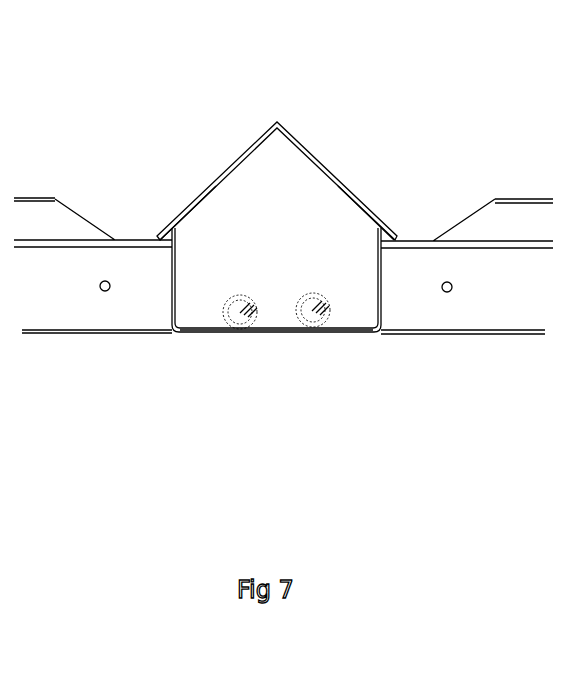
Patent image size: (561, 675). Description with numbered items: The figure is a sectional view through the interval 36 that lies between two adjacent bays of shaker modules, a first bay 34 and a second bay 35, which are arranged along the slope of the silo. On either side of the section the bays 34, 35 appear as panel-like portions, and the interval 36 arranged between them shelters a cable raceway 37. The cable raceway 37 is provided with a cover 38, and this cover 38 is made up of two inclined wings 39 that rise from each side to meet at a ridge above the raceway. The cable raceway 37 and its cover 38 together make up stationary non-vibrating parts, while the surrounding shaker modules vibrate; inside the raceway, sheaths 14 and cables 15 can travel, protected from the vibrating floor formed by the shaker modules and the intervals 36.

The sheath 14 is at (298, 333).
The cable 15 is at (300, 322).
The bay 34 is at (35, 178).
The bay 35 is at (527, 187).
The interval 36 is at (276, 277).
The cable raceway 37 is at (365, 335).
The cover 38 is at (282, 105).
The inclined wing 39 is at (220, 177).